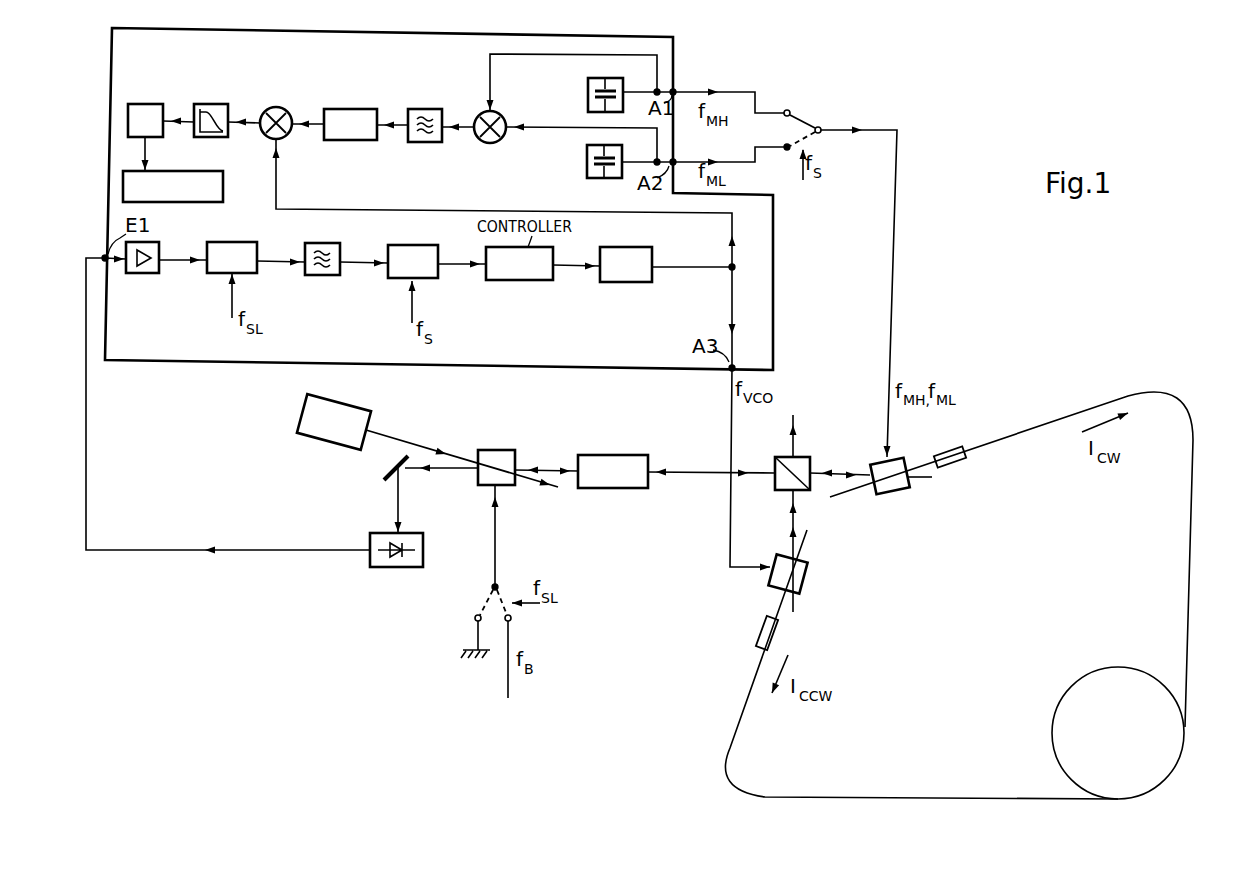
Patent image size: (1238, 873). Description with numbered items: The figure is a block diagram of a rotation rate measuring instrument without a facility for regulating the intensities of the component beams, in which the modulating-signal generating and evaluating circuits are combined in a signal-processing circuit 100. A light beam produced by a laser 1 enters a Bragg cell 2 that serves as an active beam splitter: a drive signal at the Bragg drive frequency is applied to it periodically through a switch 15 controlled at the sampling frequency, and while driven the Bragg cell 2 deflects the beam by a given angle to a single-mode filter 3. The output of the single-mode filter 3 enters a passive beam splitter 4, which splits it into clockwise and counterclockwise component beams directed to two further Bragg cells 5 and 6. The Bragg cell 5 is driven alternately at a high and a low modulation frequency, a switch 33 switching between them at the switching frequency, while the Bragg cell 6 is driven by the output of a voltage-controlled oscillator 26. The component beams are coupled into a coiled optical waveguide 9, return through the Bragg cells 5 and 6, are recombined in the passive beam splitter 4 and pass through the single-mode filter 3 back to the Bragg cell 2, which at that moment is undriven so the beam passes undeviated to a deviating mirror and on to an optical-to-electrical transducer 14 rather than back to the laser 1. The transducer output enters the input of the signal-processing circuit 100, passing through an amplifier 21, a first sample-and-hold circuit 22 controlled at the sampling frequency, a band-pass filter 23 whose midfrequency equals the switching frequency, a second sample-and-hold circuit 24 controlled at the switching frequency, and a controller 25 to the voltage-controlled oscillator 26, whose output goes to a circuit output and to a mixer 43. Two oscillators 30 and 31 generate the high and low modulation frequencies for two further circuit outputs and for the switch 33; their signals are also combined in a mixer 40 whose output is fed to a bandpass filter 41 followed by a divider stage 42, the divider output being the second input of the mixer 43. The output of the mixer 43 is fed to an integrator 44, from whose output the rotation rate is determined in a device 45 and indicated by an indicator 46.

The laser 1 is at (333, 438).
The Bragg cell 2 is at (501, 450).
The single-mode filter 3 is at (627, 455).
The passive beam splitter 4 is at (781, 456).
The Bragg cell 5 is at (877, 458).
The Bragg cell 6 is at (808, 573).
The coiled optical waveguide 9 is at (1193, 469).
The optical-to-electrical transducer 14 is at (400, 567).
The switch 15 is at (483, 604).
The amplifier 21 is at (145, 274).
The first sample-and-hold circuit 22 is at (212, 274).
The band-pass filter 23 is at (310, 276).
The second sample-and-hold circuit 24 is at (400, 281).
The controller 25 is at (510, 281).
The voltage-controlled oscillator 26 is at (620, 282).
The oscillator 30 is at (588, 93).
The oscillator 31 is at (587, 172).
The switch 33 is at (801, 121).
The mixer 40 is at (485, 111).
The bandpass filter 41 is at (425, 108).
The divider stage 42 is at (350, 109).
The mixer 43 is at (276, 107).
The integrator 44 is at (212, 104).
The device 45 is at (144, 104).
The indicator 46 is at (190, 172).
The signal-processing circuit 100 is at (673, 46).